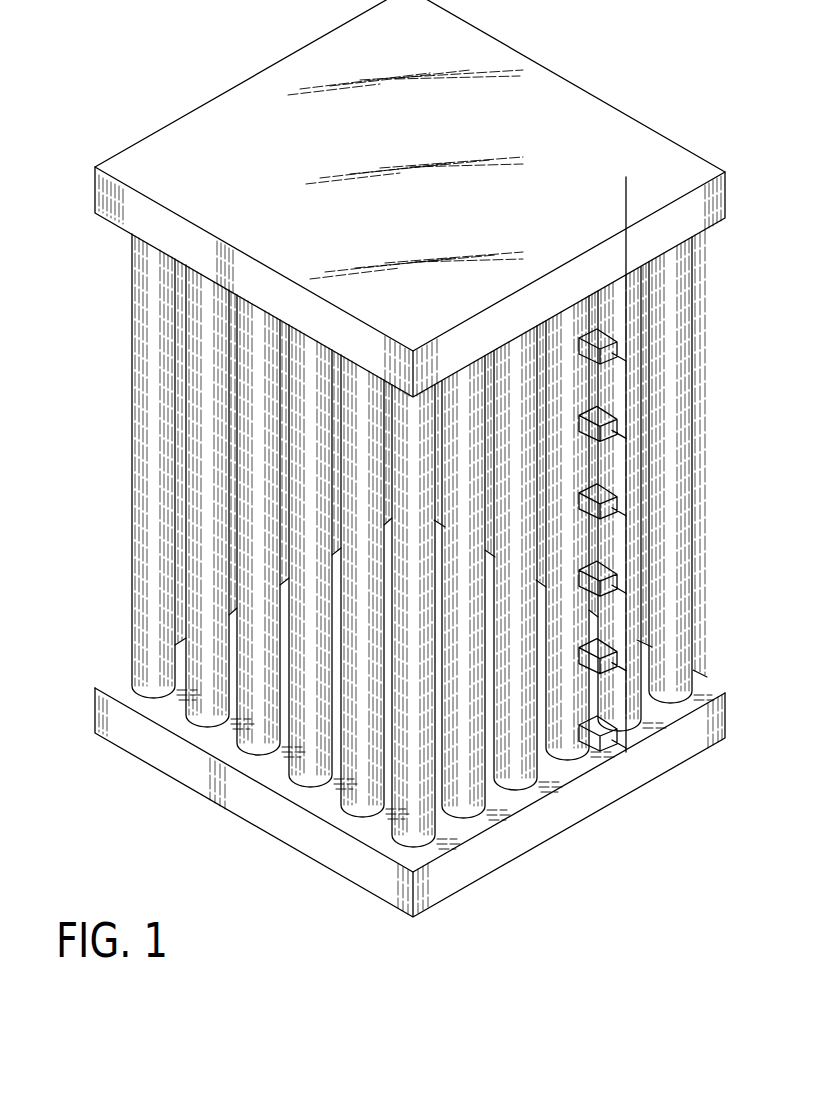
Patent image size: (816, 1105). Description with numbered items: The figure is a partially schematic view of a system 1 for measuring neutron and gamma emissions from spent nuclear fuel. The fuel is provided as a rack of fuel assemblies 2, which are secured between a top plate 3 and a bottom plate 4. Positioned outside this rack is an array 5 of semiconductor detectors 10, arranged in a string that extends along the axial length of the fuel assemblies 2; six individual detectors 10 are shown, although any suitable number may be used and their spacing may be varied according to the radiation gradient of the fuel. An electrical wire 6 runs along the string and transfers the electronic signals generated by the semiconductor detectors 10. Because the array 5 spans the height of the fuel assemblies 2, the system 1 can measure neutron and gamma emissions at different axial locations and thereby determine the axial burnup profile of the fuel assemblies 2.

The system 1 is at (162, 90).
The fuel assembly 2 is at (133, 608).
The top plate 3 is at (118, 216).
The bottom plate 4 is at (200, 783).
The array of semiconductor detectors 5 is at (614, 488).
The electrical wire 6 is at (625, 204).
The semiconductor detector 10 is at (592, 742).